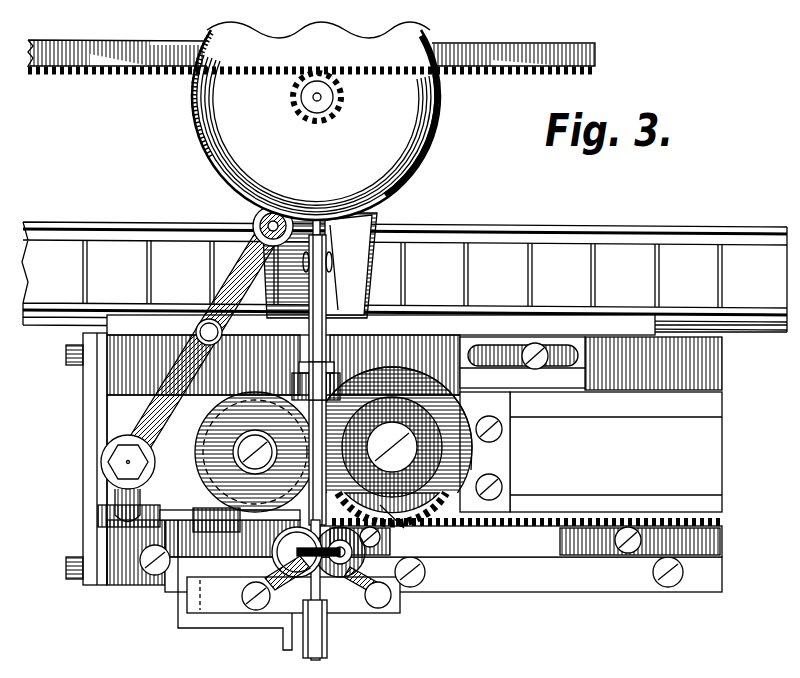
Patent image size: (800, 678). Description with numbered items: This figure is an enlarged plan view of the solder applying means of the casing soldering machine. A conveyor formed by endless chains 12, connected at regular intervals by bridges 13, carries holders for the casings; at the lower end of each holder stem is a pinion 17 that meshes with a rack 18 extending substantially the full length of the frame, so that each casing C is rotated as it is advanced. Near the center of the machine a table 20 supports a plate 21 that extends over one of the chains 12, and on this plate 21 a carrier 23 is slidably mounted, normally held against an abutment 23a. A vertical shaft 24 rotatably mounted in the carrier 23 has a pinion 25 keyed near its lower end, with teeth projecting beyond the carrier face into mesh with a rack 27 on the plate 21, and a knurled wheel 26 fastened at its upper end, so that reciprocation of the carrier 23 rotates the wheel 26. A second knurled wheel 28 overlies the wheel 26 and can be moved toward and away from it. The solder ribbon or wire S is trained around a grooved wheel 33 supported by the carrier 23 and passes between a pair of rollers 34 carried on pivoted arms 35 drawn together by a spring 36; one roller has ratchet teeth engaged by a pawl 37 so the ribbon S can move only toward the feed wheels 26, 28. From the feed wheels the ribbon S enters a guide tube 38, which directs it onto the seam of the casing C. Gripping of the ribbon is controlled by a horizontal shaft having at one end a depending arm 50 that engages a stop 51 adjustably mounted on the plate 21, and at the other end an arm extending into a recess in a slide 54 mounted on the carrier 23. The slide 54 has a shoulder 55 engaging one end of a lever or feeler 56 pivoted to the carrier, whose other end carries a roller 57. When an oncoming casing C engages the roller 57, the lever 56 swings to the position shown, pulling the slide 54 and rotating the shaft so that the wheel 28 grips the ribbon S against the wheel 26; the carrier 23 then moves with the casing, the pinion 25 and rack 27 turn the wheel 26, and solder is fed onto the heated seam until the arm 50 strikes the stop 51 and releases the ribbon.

The casing C is at (220, 135).
The solder ribbon or wire S is at (320, 222).
The endless chains 12 is at (506, 268).
The bridges 13 is at (392, 215).
The pinion 17 is at (342, 97).
The rack 18 is at (506, 76).
The table 20 is at (568, 590).
The plate 21 is at (703, 450).
The carrier 23 is at (497, 455).
The abutment 23a is at (87, 452).
The vertical shaft 24 is at (398, 527).
The pinion 25 is at (425, 512).
The knurled wheel 26 is at (396, 392).
The rack 27 is at (707, 547).
The second knurled wheel 28 is at (238, 408).
The grooved wheel 33 is at (327, 653).
The rollers 34 is at (275, 550).
The pivoted arms 35 is at (272, 592).
The spring 36 is at (328, 565).
The pawl 37 is at (352, 598).
The guide tube 38 is at (326, 297).
The depending arm 50 is at (341, 370).
The stop 51 is at (580, 365).
The slide 54 is at (178, 510).
The shoulder 55 is at (100, 512).
The lever or feeler 56 is at (190, 355).
The roller 57 is at (258, 218).